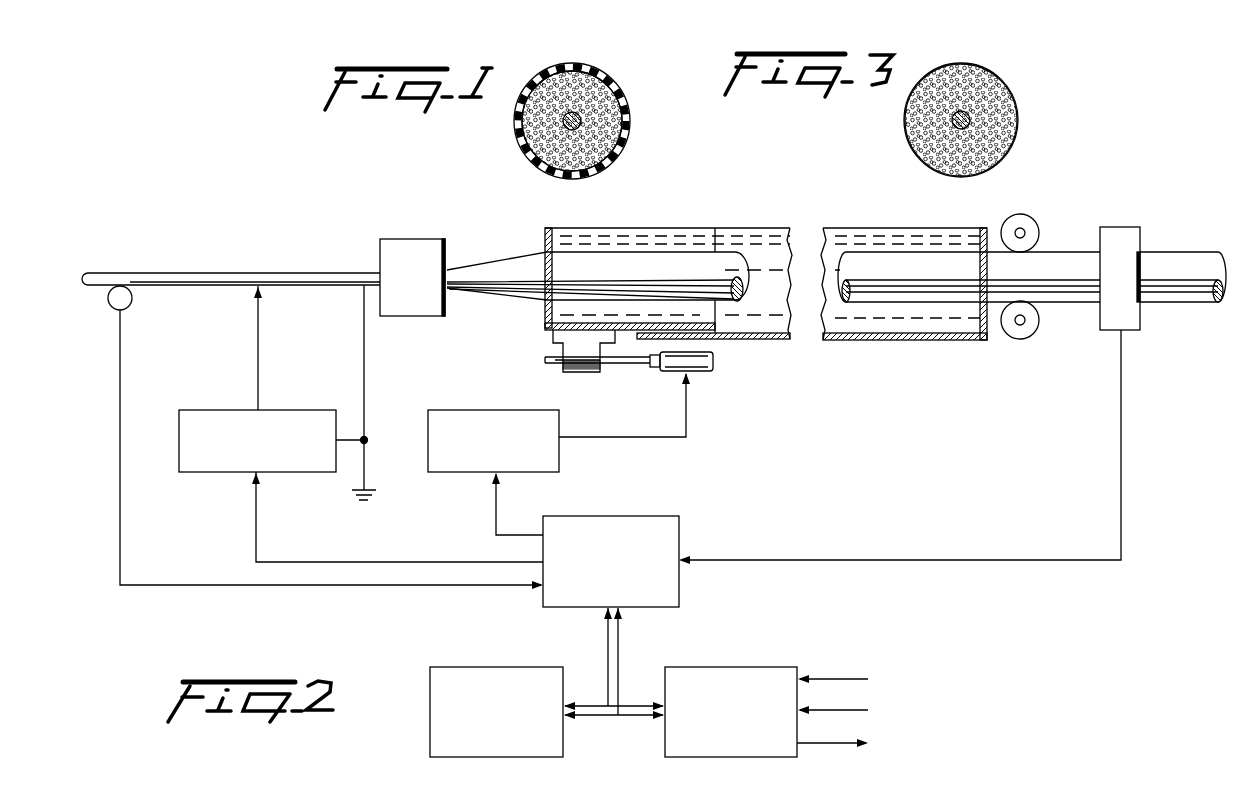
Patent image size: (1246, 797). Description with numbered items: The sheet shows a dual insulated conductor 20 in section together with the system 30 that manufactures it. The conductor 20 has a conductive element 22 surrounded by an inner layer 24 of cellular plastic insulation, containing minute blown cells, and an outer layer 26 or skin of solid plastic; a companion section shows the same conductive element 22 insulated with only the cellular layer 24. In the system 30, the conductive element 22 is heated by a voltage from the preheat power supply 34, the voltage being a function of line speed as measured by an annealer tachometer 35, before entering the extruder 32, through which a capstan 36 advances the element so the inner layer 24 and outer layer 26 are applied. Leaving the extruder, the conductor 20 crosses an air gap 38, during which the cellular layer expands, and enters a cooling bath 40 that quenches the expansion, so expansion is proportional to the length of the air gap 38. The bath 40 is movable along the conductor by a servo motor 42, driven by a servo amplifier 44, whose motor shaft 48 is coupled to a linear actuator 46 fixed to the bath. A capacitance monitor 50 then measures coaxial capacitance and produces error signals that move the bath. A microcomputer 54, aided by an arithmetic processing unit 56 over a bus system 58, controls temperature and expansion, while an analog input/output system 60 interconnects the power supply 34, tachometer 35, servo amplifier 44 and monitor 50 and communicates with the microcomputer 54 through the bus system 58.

In FIG. 1, the dual insulated conductor 20 is at (636, 122).
In FIG. 3, the dual insulated conductor 20 is at (910, 142).
In FIG. 2, the dual insulated conductor 20 is at (493, 258).
In FIG. 1, the conductive element 22 is at (598, 98).
In FIG. 3, the conductive element 22 is at (968, 118).
In FIG. 2, the conductive element 22 is at (140, 272).
In FIG. 1, the inner layer 24 is at (549, 92).
In FIG. 3, the inner layer 24 is at (1000, 118).
In FIG. 1, the outer layer 26 is at (623, 147).
In FIG. 2, the system 30 is at (466, 314).
In FIG. 2, the extruder 32 is at (392, 243).
In FIG. 2, the preheat power supply 34 is at (300, 408).
In FIG. 2, the annealer tachometer 35 is at (127, 306).
In FIG. 2, the capstan 36 is at (1027, 218).
In FIG. 2, the air gap 38 is at (462, 243).
In FIG. 2, the cooling bath 40 is at (543, 316).
In FIG. 2, the servo motor 42 is at (710, 368).
In FIG. 2, the servo amplifier 44 is at (553, 447).
In FIG. 2, the linear actuator 46 is at (552, 342).
In FIG. 2, the motor shaft 48 is at (633, 365).
In FIG. 2, the capacitance monitor 50 is at (1128, 234).
In FIG. 2, the microcomputer 54 is at (750, 660).
In FIG. 2, the arithmetic processing unit 56 is at (472, 672).
In FIG. 2, the bus system 58 is at (618, 641).
In FIG. 2, the analog input/output system 60 is at (662, 525).